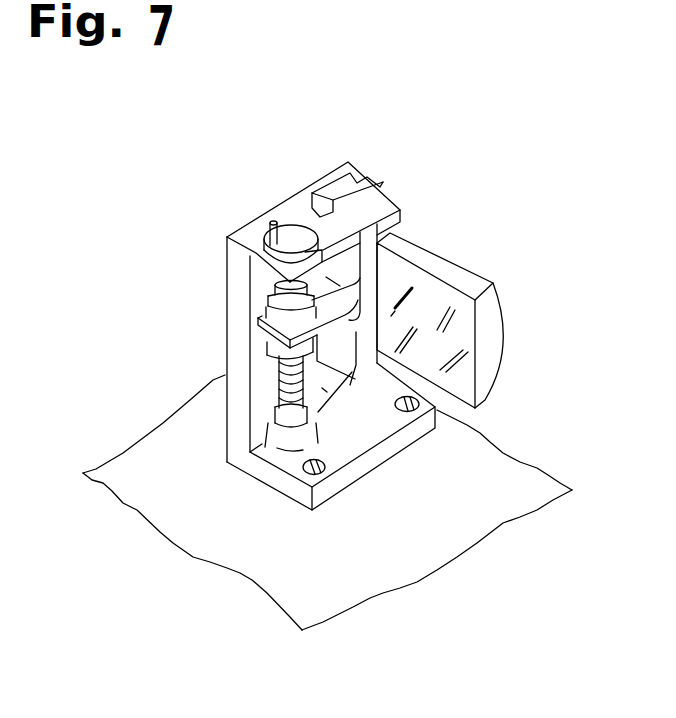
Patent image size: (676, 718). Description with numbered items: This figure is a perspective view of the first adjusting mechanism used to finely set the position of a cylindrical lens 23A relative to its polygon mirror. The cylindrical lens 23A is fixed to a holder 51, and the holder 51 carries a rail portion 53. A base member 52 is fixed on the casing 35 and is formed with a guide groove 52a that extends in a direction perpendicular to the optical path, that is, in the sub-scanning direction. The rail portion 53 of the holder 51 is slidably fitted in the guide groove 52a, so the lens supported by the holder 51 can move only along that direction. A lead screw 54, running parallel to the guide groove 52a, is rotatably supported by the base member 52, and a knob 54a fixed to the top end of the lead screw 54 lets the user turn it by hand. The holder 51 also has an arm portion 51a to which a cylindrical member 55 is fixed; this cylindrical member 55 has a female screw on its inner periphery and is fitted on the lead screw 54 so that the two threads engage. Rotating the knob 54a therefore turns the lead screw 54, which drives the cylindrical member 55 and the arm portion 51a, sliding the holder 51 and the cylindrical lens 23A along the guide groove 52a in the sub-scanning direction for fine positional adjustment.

The cylindrical lens 23A is at (498, 349).
The casing 35 is at (348, 583).
The holder 51 is at (382, 208).
The arm portion 51a is at (256, 317).
The base member 52 is at (352, 438).
The guide groove 52a is at (327, 392).
The rail portion 53 is at (317, 197).
The lead screw 54 is at (280, 393).
The knob 54a is at (293, 230).
The cylindrical member 55 is at (260, 350).